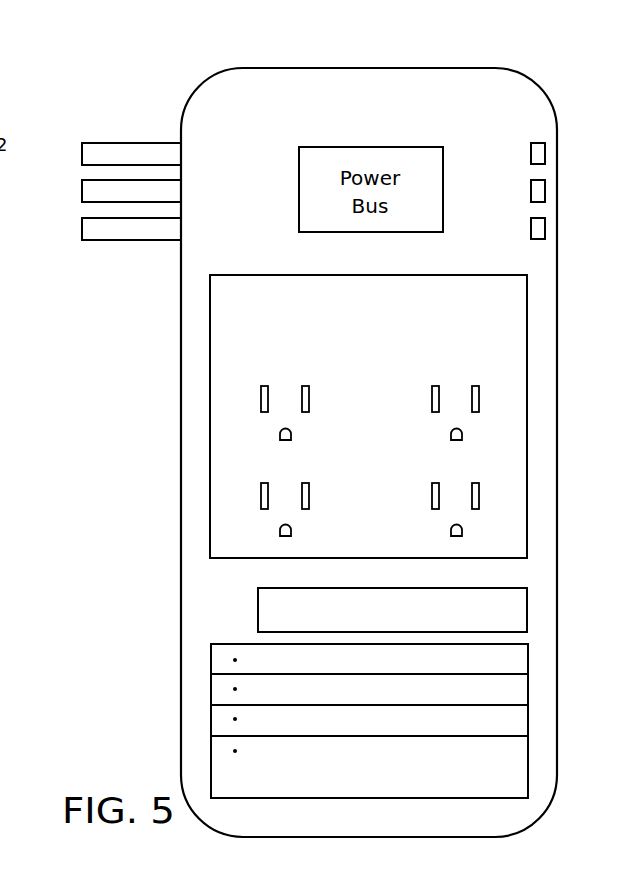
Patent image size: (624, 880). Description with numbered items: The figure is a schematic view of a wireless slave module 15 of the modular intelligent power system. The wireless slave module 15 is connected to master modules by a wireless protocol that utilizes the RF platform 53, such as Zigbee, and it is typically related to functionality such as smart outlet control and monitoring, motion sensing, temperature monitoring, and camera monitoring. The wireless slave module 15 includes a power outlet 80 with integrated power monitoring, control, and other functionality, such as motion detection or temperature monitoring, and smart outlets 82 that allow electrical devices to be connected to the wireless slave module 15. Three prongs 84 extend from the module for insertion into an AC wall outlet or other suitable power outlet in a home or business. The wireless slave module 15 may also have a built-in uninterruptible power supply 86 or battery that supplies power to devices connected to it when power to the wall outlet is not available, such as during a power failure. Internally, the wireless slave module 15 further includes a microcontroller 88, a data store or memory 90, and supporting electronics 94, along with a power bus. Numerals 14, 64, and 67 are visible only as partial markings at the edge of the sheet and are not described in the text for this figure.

The wireless slave module 15 is at (517, 65).
The prongs 84 is at (80, 160).
The power outlet 80 is at (546, 151).
The smart outlets 82 is at (210, 361).
The RF platform 53 is at (528, 610).
The uninterruptible power supply 86 is at (211, 661).
The microcontroller 88 is at (211, 687).
The memory 90 is at (211, 714).
The supporting electronics 94 is at (211, 742).
The clipped numeral at page edge 14 is at (7, 39).
The clipped numeral at page edge 64 is at (6, 362).
The clipped numeral at page edge 67 is at (6, 606).